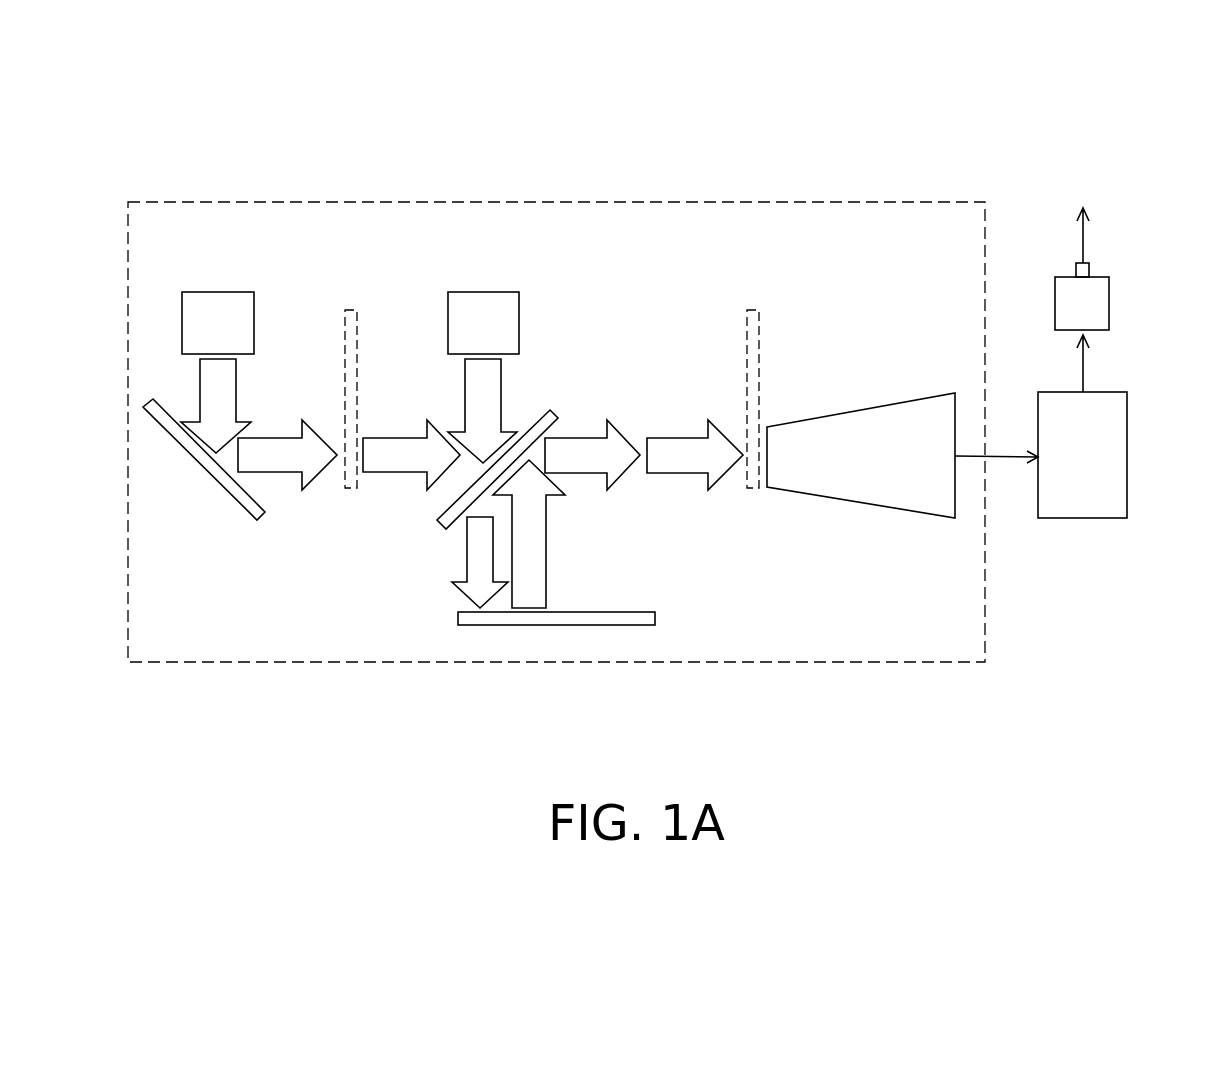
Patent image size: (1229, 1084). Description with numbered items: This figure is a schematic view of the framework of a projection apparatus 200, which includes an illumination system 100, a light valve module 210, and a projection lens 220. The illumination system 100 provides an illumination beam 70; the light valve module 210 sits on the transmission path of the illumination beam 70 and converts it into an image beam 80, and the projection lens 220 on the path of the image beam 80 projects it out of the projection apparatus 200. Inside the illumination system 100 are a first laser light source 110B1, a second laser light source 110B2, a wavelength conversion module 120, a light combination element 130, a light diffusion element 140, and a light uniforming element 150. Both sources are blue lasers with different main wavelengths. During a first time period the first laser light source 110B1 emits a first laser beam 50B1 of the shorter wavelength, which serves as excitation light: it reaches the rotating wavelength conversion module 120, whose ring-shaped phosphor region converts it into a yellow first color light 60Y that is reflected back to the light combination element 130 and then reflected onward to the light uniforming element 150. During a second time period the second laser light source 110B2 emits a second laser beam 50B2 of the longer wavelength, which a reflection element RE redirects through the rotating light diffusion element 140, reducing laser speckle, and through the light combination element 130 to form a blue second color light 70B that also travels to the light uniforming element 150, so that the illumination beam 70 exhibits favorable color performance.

The illumination system 100 is at (852, 202).
The second laser light source 110B2 is at (219, 302).
The first laser light source 110B1 is at (482, 300).
The second laser beam 50B2 is at (230, 389).
The first laser beam 50B1 is at (467, 390).
The reflection element RE is at (238, 497).
The light diffusion element 140 is at (353, 312).
The light combination element 130 is at (438, 523).
The first color light 60Y is at (577, 442).
The second color light 70B is at (678, 463).
The wavelength conversion module 120 is at (642, 607).
The light uniforming element 150 is at (880, 490).
The illumination beam 70 is at (1000, 460).
The light valve module 210 is at (1128, 457).
The image beam 80 is at (1087, 367).
The projection lens 220 is at (1112, 297).
The projection apparatus 200 is at (1132, 660).